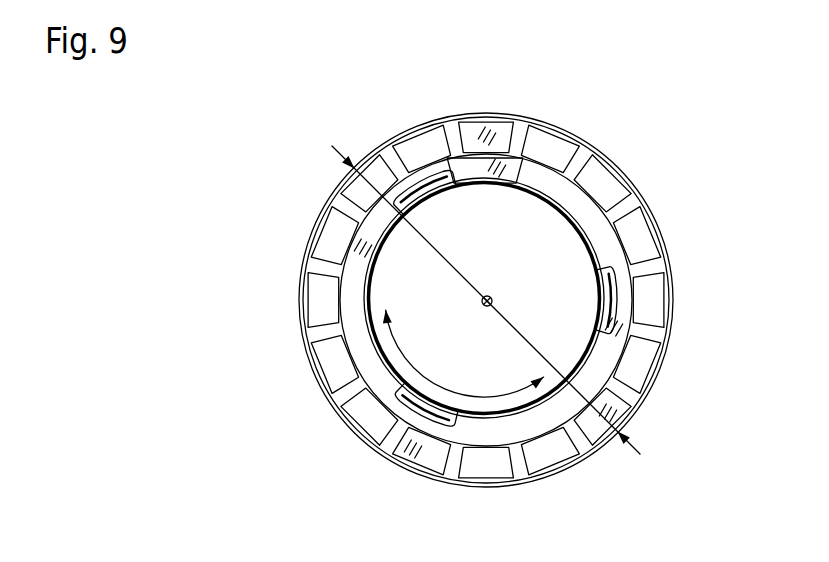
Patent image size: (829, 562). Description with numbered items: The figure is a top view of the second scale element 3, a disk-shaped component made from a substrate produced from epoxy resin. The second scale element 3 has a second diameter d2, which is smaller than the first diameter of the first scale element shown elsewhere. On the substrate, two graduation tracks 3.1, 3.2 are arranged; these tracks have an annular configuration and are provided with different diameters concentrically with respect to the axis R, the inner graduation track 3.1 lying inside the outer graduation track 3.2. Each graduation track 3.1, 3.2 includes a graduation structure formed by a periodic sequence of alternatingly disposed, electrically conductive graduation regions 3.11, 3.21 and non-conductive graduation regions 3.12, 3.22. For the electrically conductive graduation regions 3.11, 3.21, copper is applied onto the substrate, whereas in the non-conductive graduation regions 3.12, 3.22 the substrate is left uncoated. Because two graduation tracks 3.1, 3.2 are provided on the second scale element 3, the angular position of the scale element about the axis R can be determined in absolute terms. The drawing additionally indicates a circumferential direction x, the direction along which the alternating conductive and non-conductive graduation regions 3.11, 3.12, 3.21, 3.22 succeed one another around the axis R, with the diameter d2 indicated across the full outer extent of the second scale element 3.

The second scale element 3 is at (301, 221).
The graduation track 3.1 is at (477, 166).
The electrically conductive graduation region 3.11 is at (573, 195).
The non-conductive graduation region 3.12 is at (600, 272).
The graduation track 3.2 is at (322, 296).
The electrically conductive graduation region 3.21 is at (322, 373).
The non-conductive graduation region 3.22 is at (342, 401).
The second diameter d2 is at (486, 287).
The axis R is at (482, 301).
The direction of rotation x is at (463, 353).